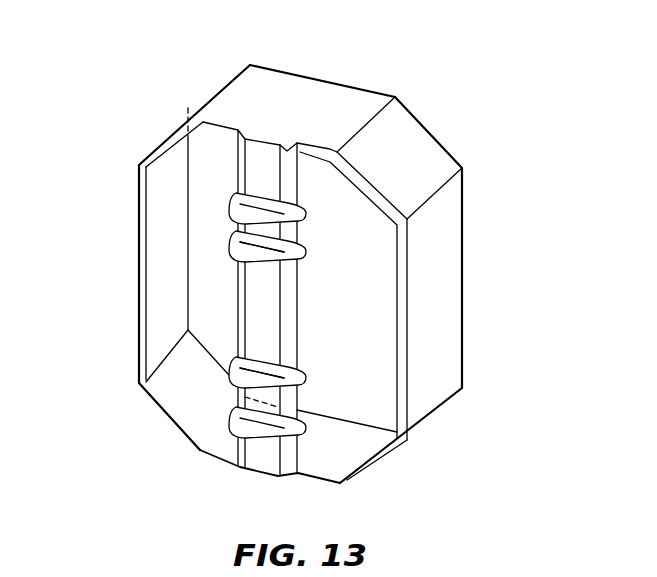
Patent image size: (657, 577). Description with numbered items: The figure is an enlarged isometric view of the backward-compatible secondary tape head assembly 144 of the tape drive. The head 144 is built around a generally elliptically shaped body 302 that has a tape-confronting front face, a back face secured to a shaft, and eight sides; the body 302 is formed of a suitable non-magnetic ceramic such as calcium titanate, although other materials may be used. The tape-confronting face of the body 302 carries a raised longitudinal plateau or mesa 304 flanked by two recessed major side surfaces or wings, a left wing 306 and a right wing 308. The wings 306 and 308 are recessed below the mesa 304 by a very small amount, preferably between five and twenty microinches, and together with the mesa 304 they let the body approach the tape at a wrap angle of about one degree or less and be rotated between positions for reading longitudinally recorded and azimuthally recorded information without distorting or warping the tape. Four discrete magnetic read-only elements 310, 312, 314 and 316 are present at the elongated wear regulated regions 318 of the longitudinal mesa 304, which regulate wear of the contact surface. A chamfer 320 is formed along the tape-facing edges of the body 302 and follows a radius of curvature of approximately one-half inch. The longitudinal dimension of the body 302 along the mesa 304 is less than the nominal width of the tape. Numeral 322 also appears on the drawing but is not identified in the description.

The secondary tape head assembly 144 is at (110, 482).
The body 302 is at (453, 305).
The mesa 304 is at (262, 160).
The left wing 306 is at (167, 250).
The right wing 308 is at (383, 348).
The magnetic read-only element 310 is at (230, 193).
The magnetic read-only element 312 is at (250, 253).
The magnetic read-only element 314 is at (247, 358).
The magnetic read-only element 316 is at (215, 452).
The wear regulated regions 318 is at (307, 249).
The chamfer 320 is at (410, 218).
The upper chamfer 322 is at (288, 160).